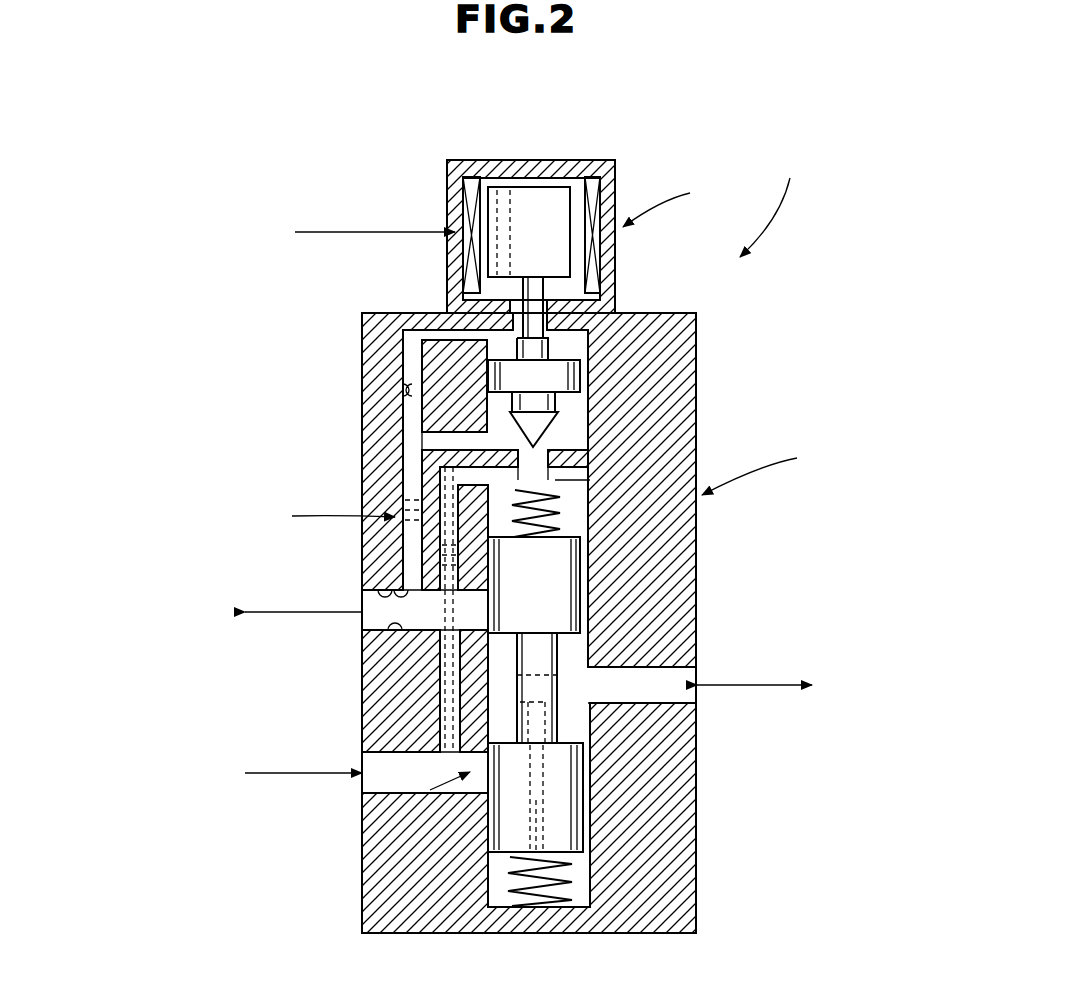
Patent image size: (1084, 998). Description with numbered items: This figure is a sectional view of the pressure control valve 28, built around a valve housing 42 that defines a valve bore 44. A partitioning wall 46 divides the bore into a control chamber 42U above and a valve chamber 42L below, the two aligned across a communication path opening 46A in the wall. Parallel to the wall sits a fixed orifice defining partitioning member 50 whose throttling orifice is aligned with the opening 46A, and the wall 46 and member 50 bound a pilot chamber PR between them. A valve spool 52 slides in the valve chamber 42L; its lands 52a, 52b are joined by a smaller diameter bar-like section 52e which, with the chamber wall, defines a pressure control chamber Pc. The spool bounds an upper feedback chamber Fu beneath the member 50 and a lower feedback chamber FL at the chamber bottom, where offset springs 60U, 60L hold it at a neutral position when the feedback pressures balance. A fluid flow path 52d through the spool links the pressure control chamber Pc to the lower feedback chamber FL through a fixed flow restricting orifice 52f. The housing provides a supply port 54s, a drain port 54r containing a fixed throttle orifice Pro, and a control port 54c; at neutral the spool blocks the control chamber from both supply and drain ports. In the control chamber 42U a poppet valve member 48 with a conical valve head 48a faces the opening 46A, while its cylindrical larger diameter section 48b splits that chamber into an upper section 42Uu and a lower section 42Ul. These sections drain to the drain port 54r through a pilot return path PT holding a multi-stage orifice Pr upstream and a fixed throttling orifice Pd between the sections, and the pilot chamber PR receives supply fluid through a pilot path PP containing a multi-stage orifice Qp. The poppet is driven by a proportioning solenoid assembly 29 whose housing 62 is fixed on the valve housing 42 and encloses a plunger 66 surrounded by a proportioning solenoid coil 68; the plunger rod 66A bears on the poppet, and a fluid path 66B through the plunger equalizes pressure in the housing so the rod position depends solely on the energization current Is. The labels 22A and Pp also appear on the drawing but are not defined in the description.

The housing 62 is at (583, 178).
The proportioning solenoid coil 68 is at (450, 190).
The plunger 66 is at (540, 195).
The fluid path 66B is at (500, 187).
The plunger rod 66A is at (536, 276).
The energization current Is is at (362, 234).
The proportioning solenoid assembly 29 is at (672, 201).
The pressure control valve 28 is at (772, 204).
The valve housing 42 is at (418, 933).
The upper section 42Uu is at (452, 318).
The control chamber 42U is at (596, 368).
The lower section 42Ul is at (445, 420).
The fixed throttling orifice Pd is at (403, 392).
The partitioning wall 46 is at (570, 455).
The communication path opening 46A is at (580, 450).
The pilot return path PT is at (413, 476).
The valve chamber 42L is at (470, 520).
The multi-stage orifice Pr is at (410, 503).
The multi-stage orifice Qp is at (450, 558).
The drain port 54r is at (382, 624).
The fixed throttle orifice Pro is at (375, 606).
The valve bore 44 is at (660, 723).
The pilot path PP is at (452, 692).
The supply port 54s is at (388, 782).
The valve spool 52 is at (390, 826).
The control port 54c is at (697, 670).
The poppet valve member 48 is at (600, 330).
The cylindrical larger diameter section 48b is at (578, 355).
The valve head 48a is at (520, 438).
The pilot chamber PR is at (585, 480).
The pilot pressure Pp is at (544, 478).
The pressure control valve 22A is at (850, 474).
The fixed orifice defining partitioning member 50 is at (590, 508).
The offset spring 60U is at (590, 568).
The upper feedback chamber Fu is at (600, 540).
The land 52b is at (600, 580).
The smaller diameter bar-like section 52e is at (558, 672).
The pressure control chamber Pc is at (600, 758).
The land 52a is at (600, 800).
The fluid flow path 52d is at (600, 830).
The fixed flow restricting orifice 52f is at (530, 800).
The offset spring 60L is at (510, 885).
The lower feedback chamber FL is at (580, 885).